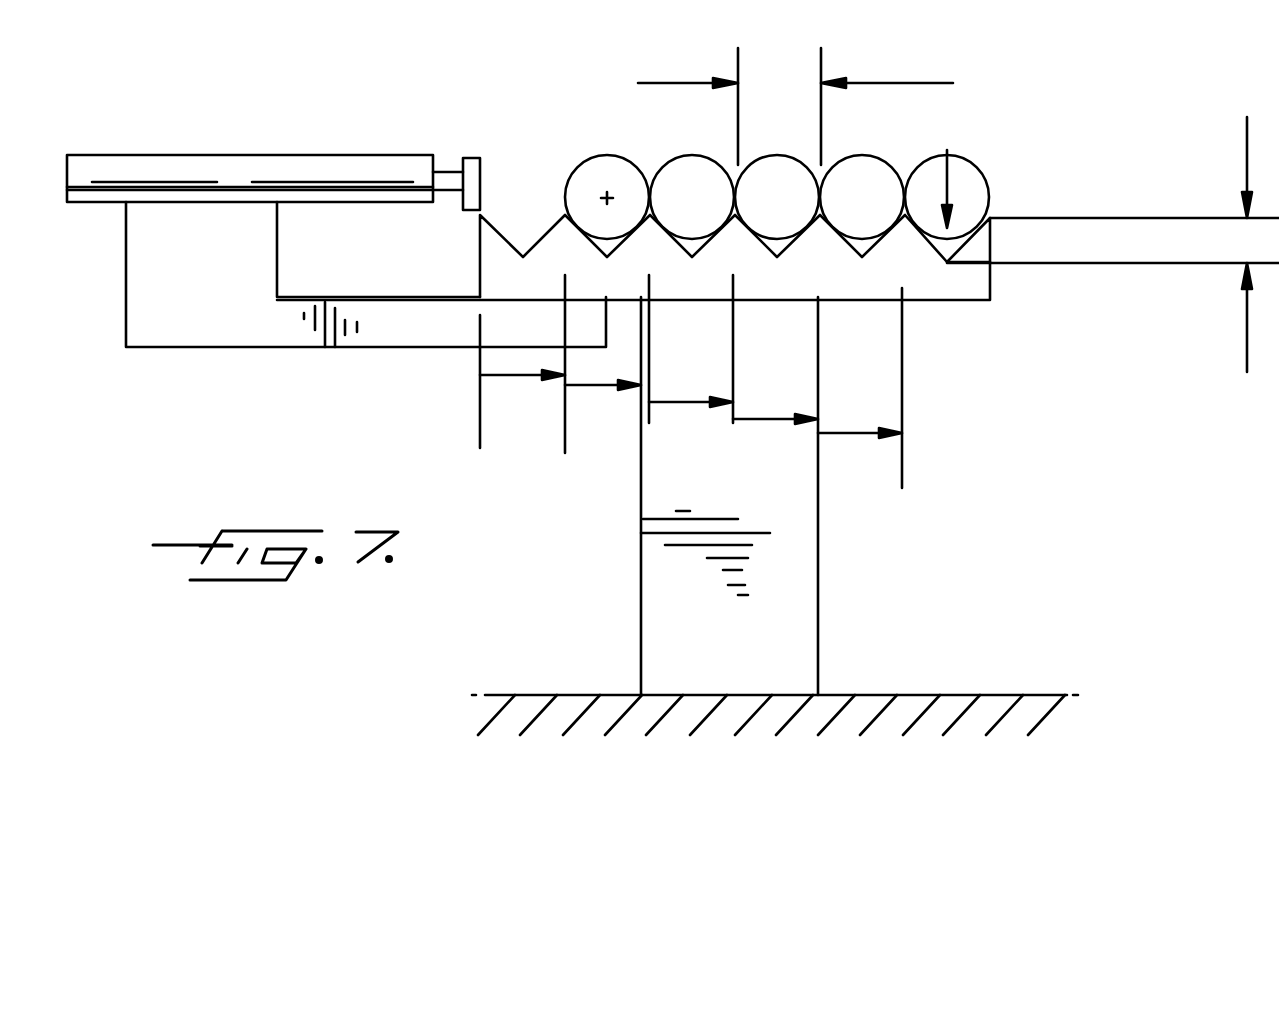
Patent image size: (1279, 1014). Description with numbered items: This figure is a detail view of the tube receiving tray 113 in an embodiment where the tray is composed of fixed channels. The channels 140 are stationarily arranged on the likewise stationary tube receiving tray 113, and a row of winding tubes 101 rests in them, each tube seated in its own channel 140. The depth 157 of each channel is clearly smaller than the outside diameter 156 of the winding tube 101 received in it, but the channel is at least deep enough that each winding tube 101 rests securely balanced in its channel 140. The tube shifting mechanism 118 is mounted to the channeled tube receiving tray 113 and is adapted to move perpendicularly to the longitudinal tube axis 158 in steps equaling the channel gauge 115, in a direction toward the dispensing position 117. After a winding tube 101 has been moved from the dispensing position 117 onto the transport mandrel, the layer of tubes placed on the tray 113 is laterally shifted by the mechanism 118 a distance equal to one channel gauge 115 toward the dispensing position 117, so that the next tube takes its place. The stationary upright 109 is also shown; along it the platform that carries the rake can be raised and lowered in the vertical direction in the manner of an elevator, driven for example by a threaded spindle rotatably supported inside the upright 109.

The winding tube 101 is at (641, 162).
The stationary upright 109 is at (795, 597).
The tube receiving tray 113 is at (917, 247).
The channel gauge 115 is at (494, 376).
The dispensing position 117 is at (950, 175).
The tube shifting mechanism 118 is at (356, 170).
The channel 140 is at (519, 230).
The outside diameter 156 is at (938, 83).
The channel depth 157 is at (1247, 166).
The longitudinal tube axis 158 is at (603, 194).